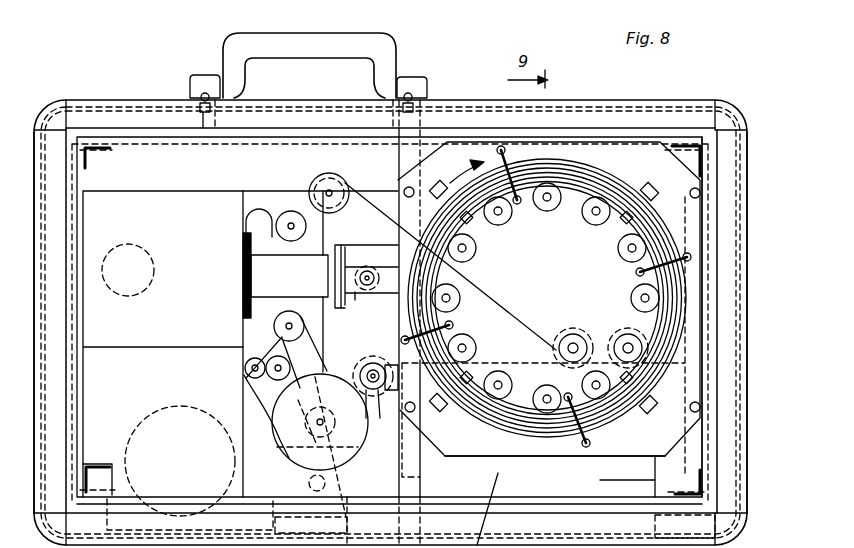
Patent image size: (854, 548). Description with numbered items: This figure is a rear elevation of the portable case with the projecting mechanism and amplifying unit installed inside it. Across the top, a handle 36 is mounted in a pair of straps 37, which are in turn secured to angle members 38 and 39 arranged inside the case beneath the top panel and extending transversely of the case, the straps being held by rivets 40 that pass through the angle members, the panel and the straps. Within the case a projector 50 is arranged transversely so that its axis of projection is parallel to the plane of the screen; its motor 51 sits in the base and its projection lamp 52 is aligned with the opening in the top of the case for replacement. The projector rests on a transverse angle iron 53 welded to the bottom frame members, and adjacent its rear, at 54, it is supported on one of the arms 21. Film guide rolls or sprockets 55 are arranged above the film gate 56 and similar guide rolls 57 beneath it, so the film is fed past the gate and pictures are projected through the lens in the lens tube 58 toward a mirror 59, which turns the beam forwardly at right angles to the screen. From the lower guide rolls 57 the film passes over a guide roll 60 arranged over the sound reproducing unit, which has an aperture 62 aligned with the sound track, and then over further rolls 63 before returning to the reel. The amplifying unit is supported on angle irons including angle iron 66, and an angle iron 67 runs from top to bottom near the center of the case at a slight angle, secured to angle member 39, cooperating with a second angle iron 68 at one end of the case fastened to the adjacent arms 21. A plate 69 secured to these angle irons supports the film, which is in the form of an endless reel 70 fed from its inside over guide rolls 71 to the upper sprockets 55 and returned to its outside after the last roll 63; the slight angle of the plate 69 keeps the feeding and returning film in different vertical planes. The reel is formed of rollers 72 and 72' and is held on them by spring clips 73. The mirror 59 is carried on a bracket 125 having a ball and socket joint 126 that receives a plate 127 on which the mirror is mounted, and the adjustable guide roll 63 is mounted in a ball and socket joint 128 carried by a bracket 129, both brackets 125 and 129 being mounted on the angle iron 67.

The handle 36 is at (283, 33).
The straps 37 is at (192, 90).
The angle member 38 is at (218, 117).
The angle member 39 is at (396, 118).
The rivets 40 is at (410, 95).
The arms 21 is at (83, 159).
The angle iron 68 is at (703, 217).
The angle iron 66 is at (663, 527).
The projector 50 is at (218, 196).
The motor 51 is at (187, 407).
The projection lamp 52 is at (143, 247).
The angle iron 53 is at (311, 526).
The support point 54 is at (88, 466).
The film guide rolls or sprockets 55 is at (291, 211).
The film gate 56 is at (243, 266).
The guide rolls 57 is at (250, 380).
The lens tube 58 is at (258, 277).
The mirror 59 is at (343, 250).
The guide roll 60 is at (357, 454).
The aperture 62 is at (340, 484).
The rolls 63 is at (288, 320).
The angle iron 67 is at (398, 168).
The plate 69 is at (627, 450).
The endless reel 70 is at (586, 171).
The guide rolls 71 is at (572, 330).
The rollers 72 is at (545, 298).
The rollers 72' is at (546, 302).
The spring clips 73 is at (546, 296).
The bracket 125 is at (386, 272).
The ball and socket joint 126 is at (370, 295).
The plate 127 is at (355, 300).
The ball and socket joint 128 is at (366, 420).
The bracket 129 is at (372, 392).